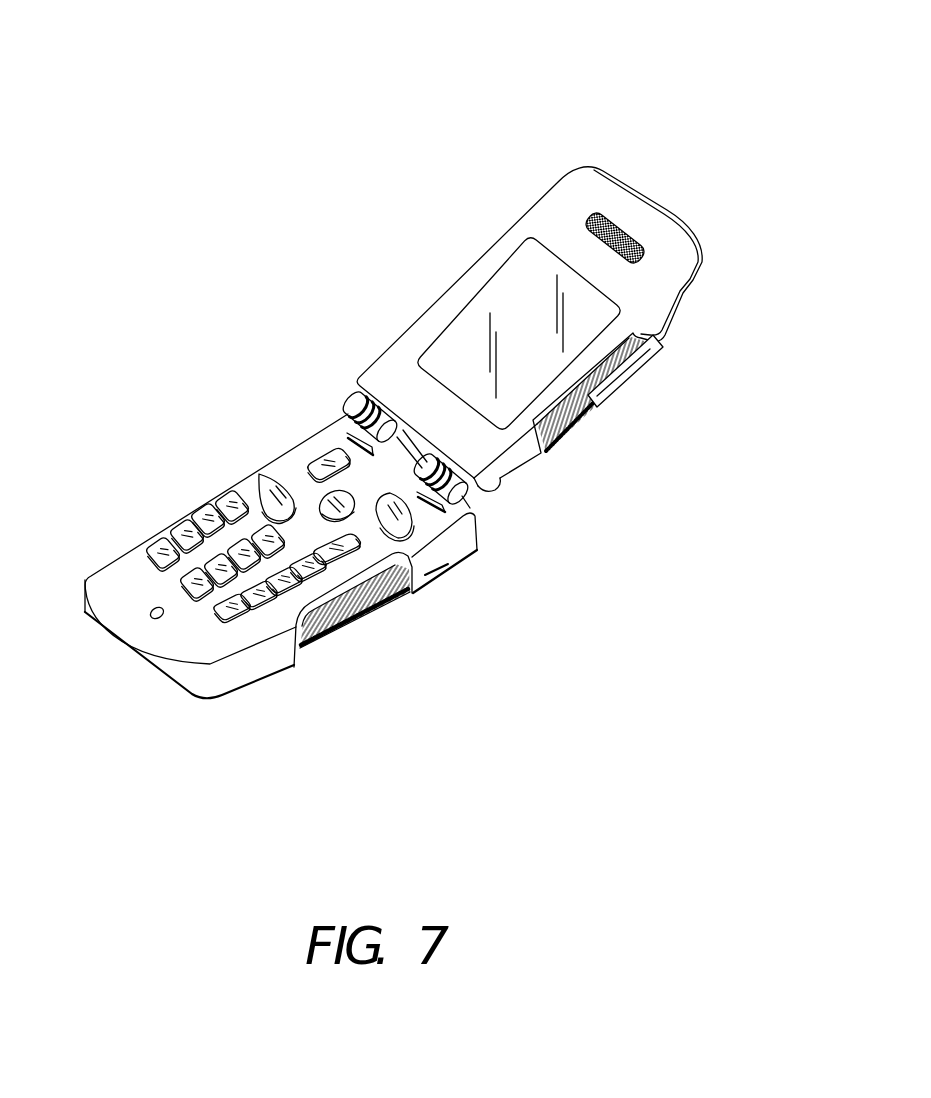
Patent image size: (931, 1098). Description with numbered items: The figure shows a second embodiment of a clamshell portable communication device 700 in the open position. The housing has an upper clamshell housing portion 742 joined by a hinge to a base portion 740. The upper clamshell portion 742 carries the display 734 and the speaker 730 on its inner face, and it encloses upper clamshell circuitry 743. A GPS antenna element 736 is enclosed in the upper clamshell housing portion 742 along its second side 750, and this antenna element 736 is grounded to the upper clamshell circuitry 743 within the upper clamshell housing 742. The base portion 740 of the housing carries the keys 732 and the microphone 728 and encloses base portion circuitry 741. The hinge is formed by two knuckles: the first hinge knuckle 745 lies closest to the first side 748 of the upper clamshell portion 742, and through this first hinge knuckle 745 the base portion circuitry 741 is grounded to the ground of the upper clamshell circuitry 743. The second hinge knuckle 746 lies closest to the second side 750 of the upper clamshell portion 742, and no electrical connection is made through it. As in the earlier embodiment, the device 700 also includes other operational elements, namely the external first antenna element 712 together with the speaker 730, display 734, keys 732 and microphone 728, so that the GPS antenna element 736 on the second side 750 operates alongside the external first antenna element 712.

The portable communication device 700 is at (756, 39).
The external first antenna element 712 is at (348, 398).
The microphone 728 is at (150, 611).
The speaker 730 is at (620, 231).
The keys 732 is at (160, 538).
The display 734 is at (547, 347).
The GPS antenna element 736 is at (625, 378).
The base portion of the housing 740 is at (247, 694).
The base portion circuitry 741 is at (350, 621).
The upper clamshell housing portion 742 is at (497, 493).
The upper clamshell circuitry 743 is at (565, 428).
The first hinge knuckle 745 is at (347, 415).
The second hinge knuckle 746 is at (478, 481).
The first side of the upper clamshell portion 748 is at (443, 281).
The second side of the upper clamshell portion 750 is at (702, 265).